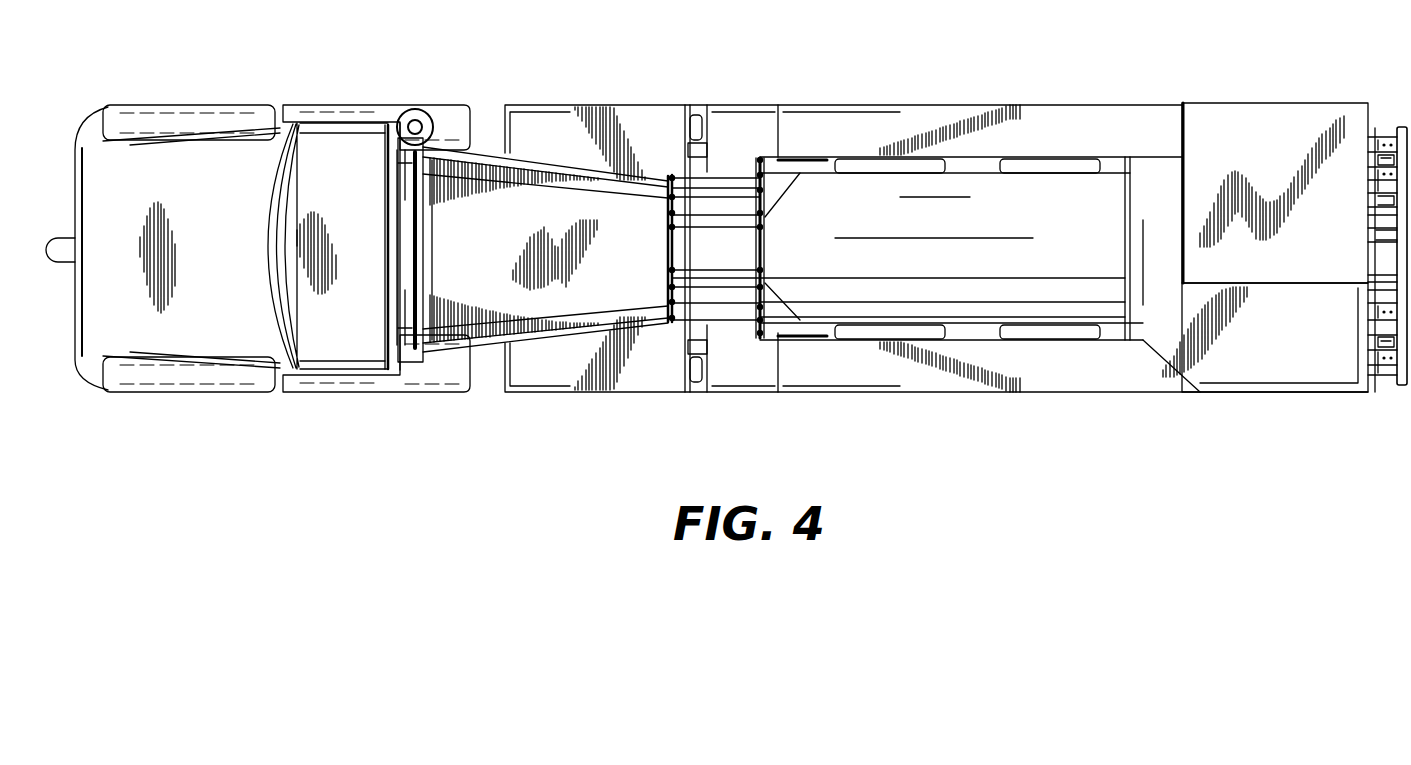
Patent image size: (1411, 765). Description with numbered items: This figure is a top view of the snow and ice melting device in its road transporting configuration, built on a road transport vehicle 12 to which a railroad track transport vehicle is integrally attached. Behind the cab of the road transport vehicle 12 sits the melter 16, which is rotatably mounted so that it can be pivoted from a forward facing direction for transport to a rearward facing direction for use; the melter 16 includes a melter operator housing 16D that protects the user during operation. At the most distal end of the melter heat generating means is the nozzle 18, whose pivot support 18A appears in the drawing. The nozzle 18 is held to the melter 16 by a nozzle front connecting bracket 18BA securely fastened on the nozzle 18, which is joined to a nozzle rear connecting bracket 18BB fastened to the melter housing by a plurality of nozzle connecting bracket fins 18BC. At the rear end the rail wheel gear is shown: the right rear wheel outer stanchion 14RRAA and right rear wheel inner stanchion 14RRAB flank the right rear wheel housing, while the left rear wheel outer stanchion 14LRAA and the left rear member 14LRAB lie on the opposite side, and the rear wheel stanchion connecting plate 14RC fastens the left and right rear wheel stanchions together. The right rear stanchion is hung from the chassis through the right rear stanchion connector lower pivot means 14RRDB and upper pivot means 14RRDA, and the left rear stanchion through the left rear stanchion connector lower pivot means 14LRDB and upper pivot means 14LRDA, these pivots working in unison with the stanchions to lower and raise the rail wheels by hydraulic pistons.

The road transport vehicle 12 is at (376, 250).
The melter 16 is at (1013, 230).
The melter operator housing 16D is at (1245, 260).
The nozzle 18 is at (545, 298).
The boom pivot post 18A is at (430, 231).
The nozzle front connecting bracket 18BA is at (672, 238).
The nozzle rear connecting bracket 18BB is at (766, 217).
The nozzle connecting bracket fins 18BC is at (717, 218).
The railroad track transport vehicle right rear wheel outer stanchion 14RRAA is at (1392, 142).
The railroad track transport vehicle right rear wheel inner stanchion 14RRAB is at (1382, 165).
The railroad track transport vehicle right rear wheel stanchion connector upper pivo 14RRDA is at (1368, 191).
The railroad track transport vehicle right rear wheel stanchion connector lower pivo 14RRDB is at (1363, 214).
The railroad track transport vehicle rear wheel stanchion connecting plate 14RC is at (1403, 234).
The railroad track transport vehicle left rear wheel stanchion connector lower pivot 14LRDB is at (1403, 281).
The railroad track transport vehicle left rear wheel stanchion connector upper pivot 14LRDA is at (1390, 306).
The left rear sensor B 14LRAB is at (1393, 333).
The railroad track transport vehicle left rear wheel outer stanchion 14LRAA is at (1393, 354).